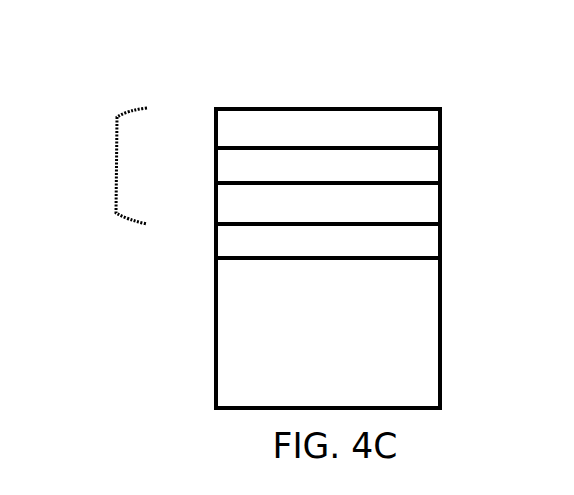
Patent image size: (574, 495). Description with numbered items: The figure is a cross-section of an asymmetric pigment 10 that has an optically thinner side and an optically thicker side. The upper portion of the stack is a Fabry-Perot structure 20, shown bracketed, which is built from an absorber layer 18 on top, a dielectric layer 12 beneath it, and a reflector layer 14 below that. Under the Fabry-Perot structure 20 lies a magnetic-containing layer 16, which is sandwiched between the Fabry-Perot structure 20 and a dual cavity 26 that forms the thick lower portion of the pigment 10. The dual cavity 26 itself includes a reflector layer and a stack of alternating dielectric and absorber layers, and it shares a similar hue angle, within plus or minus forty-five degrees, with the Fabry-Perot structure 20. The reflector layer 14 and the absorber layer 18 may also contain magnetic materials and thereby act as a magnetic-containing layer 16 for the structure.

The asymmetric pigment 10 is at (286, 66).
The absorber layer 18 is at (216, 130).
The dielectric layer 12 is at (216, 165).
The reflector layer 14 is at (216, 211).
The magnetic-containing layer 16 is at (216, 249).
The dual cavity 26 is at (216, 318).
The Fabry-Perot structure 20 is at (116, 167).